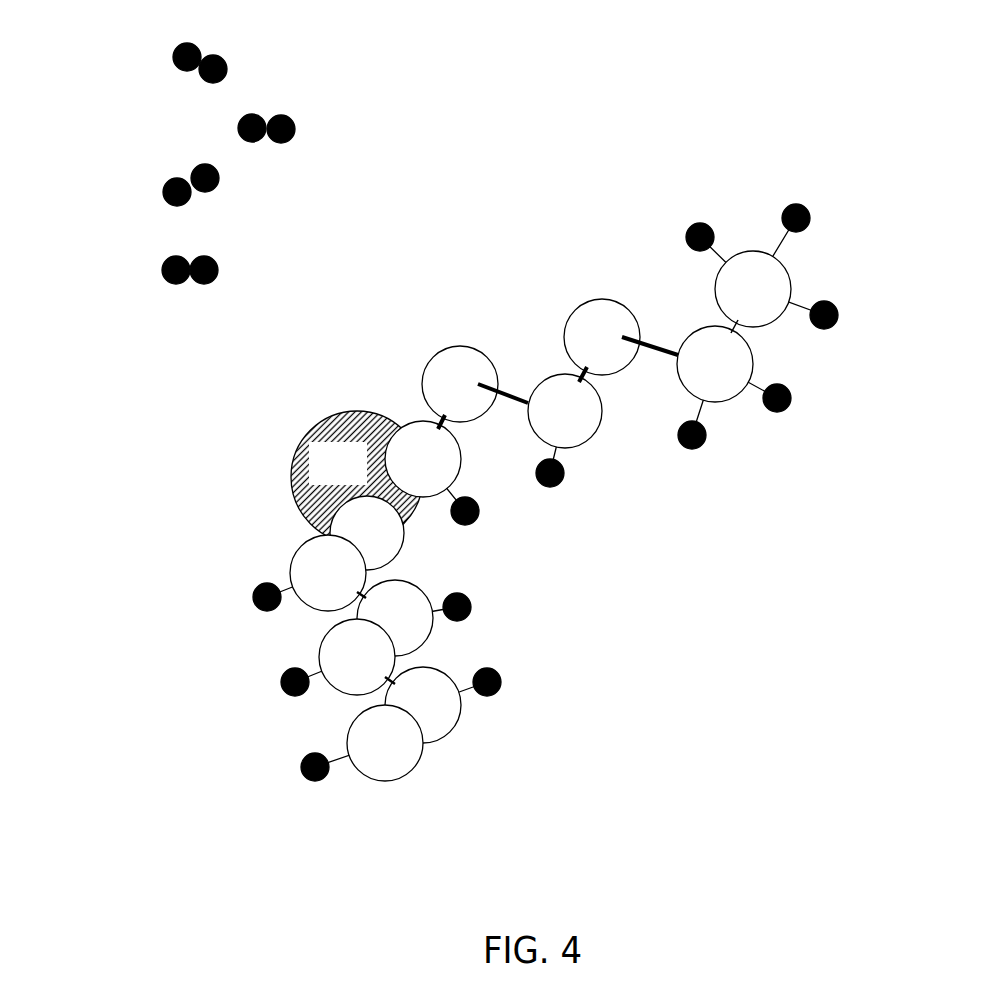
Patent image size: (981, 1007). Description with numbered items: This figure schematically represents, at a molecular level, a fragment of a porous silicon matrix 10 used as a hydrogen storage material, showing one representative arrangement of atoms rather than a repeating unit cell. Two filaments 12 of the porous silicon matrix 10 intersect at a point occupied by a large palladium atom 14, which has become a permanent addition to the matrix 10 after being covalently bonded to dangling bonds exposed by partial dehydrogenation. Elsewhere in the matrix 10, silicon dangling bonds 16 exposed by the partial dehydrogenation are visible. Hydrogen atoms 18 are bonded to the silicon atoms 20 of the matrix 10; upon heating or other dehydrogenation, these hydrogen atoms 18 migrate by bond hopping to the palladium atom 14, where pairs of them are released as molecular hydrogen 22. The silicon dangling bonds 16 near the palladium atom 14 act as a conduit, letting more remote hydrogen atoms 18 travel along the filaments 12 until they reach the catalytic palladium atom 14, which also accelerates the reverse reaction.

The porous silicon matrix 10 is at (537, 200).
The filaments 12 is at (767, 480).
The palladium atom 14 is at (292, 465).
The silicon dangling bonds 16 is at (575, 307).
The hydrogen atoms 18 is at (302, 760).
The silicon atoms 20 is at (387, 550).
The molecular hydrogen 22 is at (168, 260).